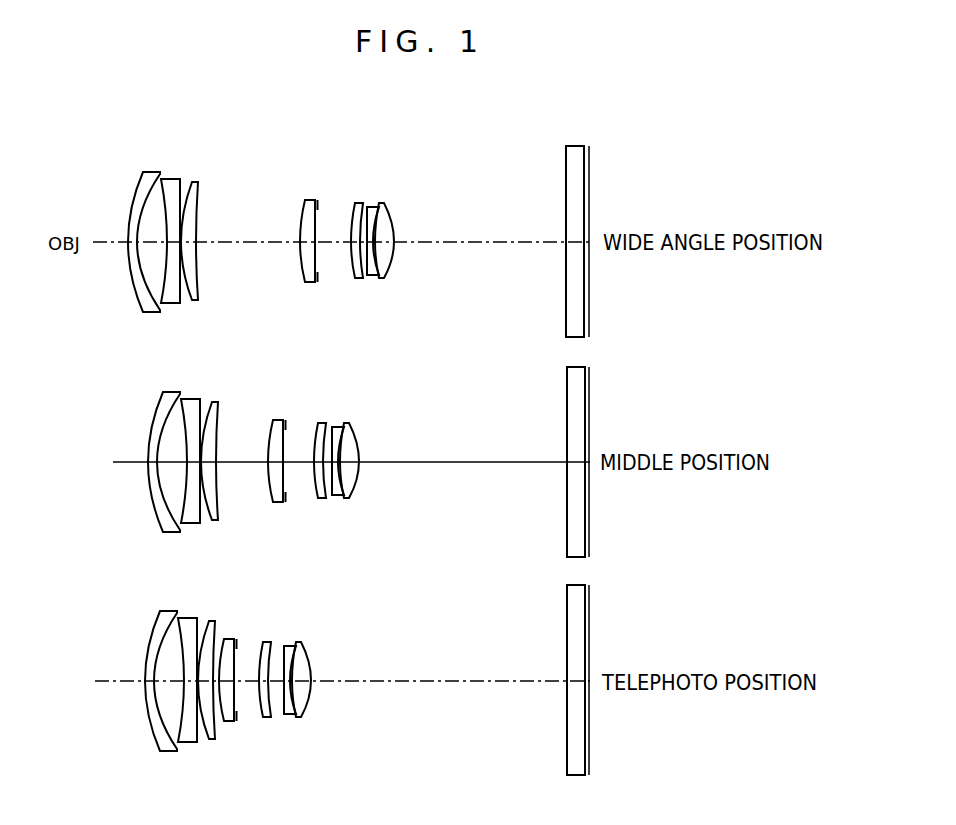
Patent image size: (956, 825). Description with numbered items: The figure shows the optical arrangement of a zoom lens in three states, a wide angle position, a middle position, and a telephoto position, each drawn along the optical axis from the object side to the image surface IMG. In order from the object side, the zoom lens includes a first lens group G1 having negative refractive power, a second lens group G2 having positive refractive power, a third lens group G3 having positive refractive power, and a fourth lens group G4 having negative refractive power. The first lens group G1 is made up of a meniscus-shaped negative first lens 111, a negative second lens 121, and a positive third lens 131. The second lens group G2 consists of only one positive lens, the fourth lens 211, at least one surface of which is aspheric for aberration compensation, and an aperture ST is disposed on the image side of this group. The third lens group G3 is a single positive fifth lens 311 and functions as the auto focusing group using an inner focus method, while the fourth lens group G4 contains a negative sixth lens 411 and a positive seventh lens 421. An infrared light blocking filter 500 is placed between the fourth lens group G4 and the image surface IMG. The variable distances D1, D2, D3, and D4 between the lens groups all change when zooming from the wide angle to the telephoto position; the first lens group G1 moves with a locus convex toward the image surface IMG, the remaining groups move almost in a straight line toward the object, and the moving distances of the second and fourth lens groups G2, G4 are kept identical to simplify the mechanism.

The first lens 111 is at (130, 261).
The second lens 121 is at (169, 266).
The third lens 131 is at (202, 265).
The fourth lens 211 is at (299, 261).
The fifth lens 311 is at (357, 259).
The sixth lens 411 is at (375, 276).
The seventh lens 421 is at (401, 261).
The infrared light blocking filter 500 is at (546, 241).
The aperture ST is at (319, 275).
The image surface IMG is at (594, 218).
The first lens group G1 is at (200, 146).
The second lens group G2 is at (330, 146).
The third lens group G3 is at (368, 146).
The fourth lens group G4 is at (410, 146).
The variable distance D1 is at (243, 464).
The variable distance D2 is at (295, 464).
The variable distance D3 is at (328, 464).
The variable distance D4 is at (438, 464).